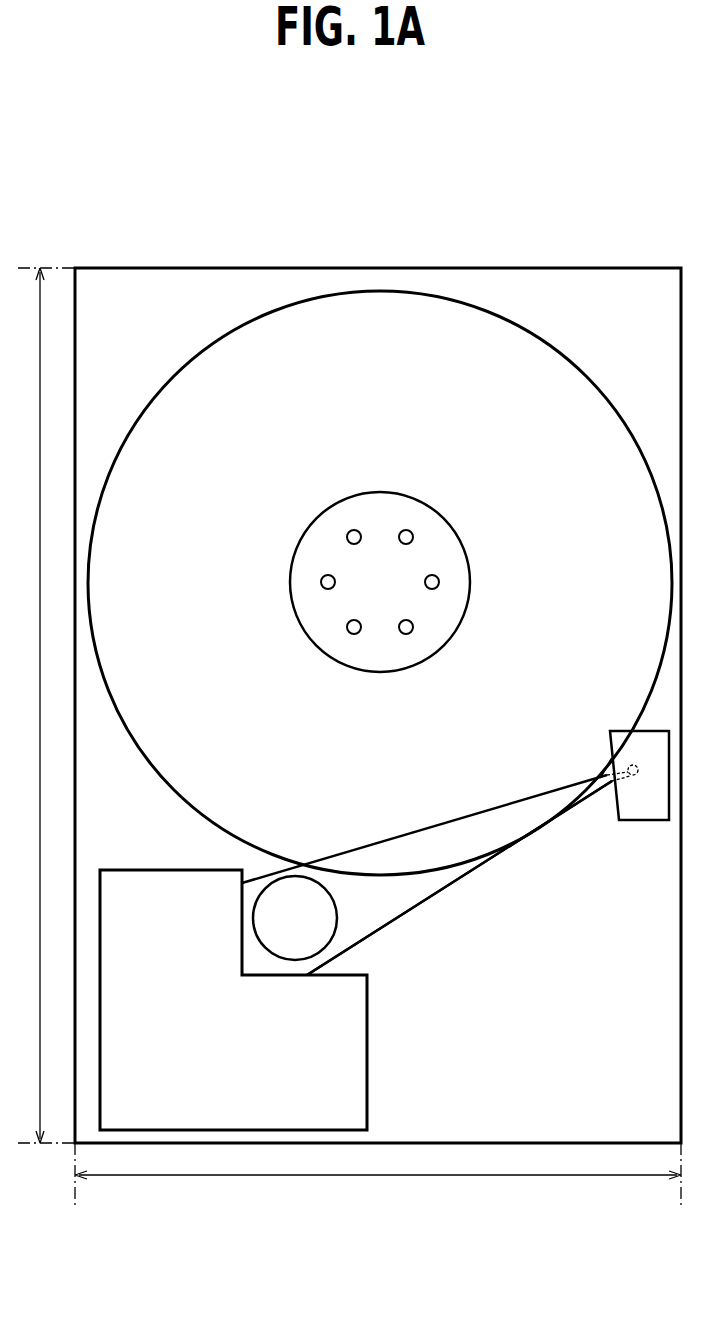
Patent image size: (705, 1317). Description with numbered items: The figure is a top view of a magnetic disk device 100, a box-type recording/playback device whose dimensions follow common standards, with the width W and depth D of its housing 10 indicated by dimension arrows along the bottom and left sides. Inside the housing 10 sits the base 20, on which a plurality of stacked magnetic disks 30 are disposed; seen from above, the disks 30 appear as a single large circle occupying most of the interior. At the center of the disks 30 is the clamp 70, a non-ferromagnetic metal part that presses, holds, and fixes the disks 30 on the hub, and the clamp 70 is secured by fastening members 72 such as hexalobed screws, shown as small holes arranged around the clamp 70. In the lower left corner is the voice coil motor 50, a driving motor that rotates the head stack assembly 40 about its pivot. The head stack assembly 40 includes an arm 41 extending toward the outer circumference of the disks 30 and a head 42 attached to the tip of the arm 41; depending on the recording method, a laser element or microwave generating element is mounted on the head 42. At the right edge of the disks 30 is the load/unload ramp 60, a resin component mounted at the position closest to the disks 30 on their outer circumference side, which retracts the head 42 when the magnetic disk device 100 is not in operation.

The magnetic disk device 100 is at (566, 183).
The housing 10 is at (236, 268).
The base 20 is at (147, 332).
The magnetic disks 30 is at (517, 357).
The clamp 70 is at (330, 540).
The fastening member 72 is at (406, 531).
The load/unload ramp 60 is at (650, 743).
The voice coil motor 50 is at (235, 1060).
The head stack assembly 40 is at (419, 870).
The arm 41 is at (517, 822).
The head 42 is at (636, 775).